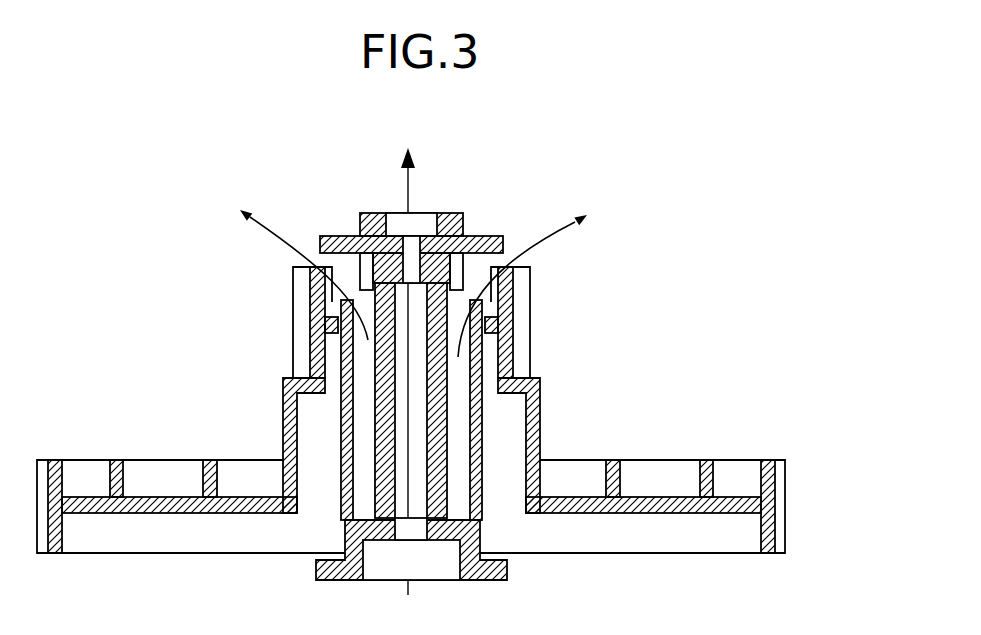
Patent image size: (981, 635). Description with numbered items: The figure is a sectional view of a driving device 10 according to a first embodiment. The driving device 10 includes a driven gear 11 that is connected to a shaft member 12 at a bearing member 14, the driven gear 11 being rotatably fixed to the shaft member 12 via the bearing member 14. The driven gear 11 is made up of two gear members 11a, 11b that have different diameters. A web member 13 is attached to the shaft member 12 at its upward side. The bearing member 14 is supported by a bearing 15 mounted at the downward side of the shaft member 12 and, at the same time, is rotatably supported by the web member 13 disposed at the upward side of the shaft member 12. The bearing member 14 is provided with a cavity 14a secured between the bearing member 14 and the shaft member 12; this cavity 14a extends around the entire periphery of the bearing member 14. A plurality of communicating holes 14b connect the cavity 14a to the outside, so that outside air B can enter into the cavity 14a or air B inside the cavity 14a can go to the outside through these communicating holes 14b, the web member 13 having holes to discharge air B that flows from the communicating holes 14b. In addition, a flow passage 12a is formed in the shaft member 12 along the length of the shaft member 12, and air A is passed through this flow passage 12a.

The driving device 10 is at (473, 370).
The driven gear 11 is at (678, 460).
The gear member 11a is at (537, 315).
The gear member 11b is at (800, 497).
The shaft member 12 is at (380, 496).
The flow passage 12a is at (400, 458).
The web member 13 is at (352, 212).
The bearing member 14 is at (483, 427).
The cavity 14a is at (453, 407).
The communicating holes 14b is at (477, 270).
The bearing 15 is at (495, 522).